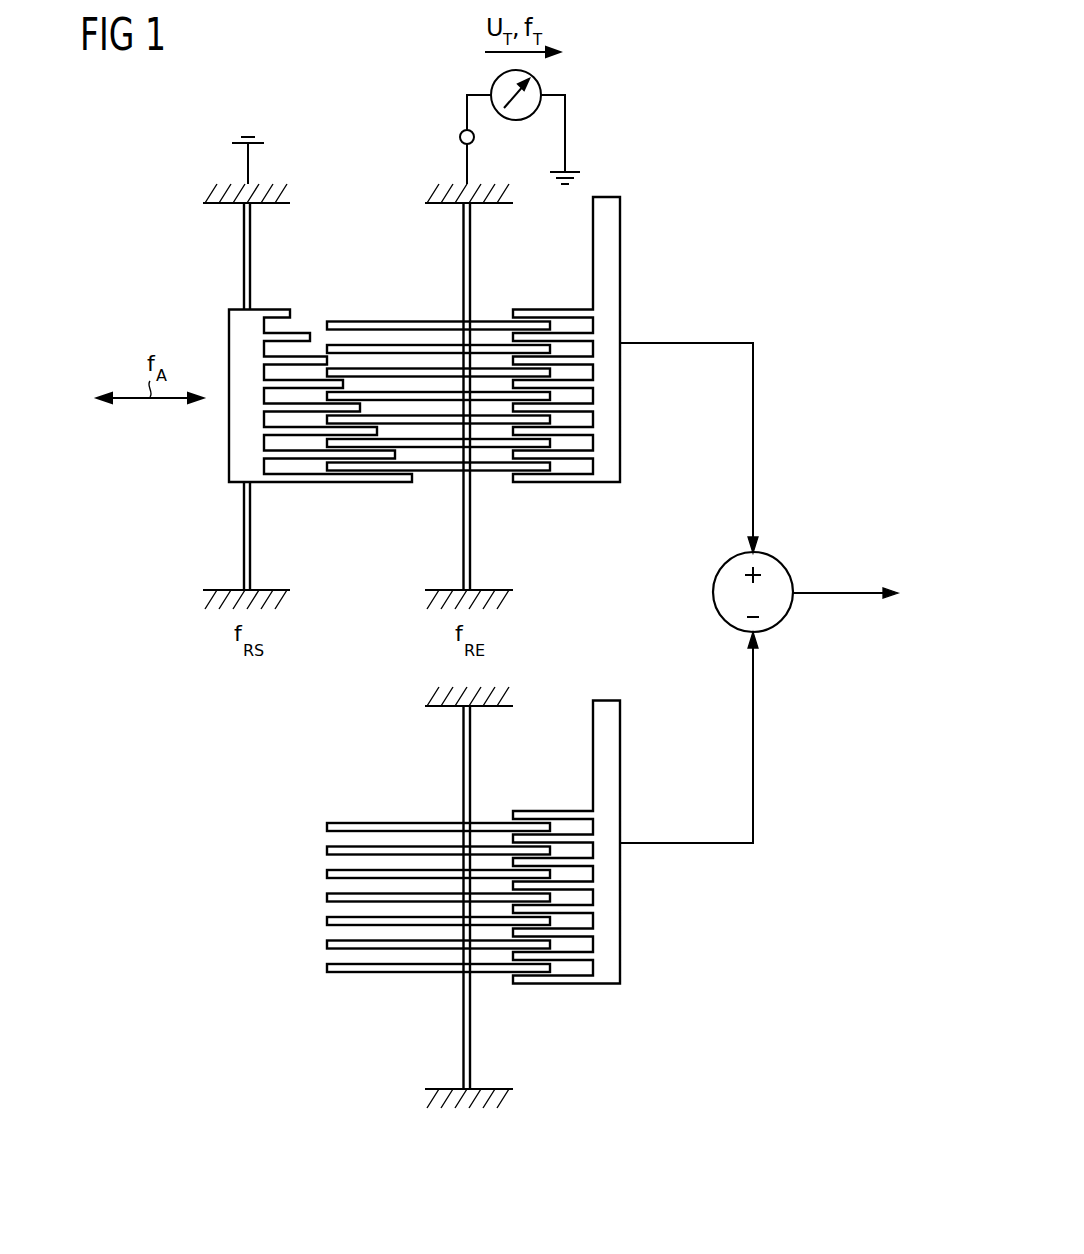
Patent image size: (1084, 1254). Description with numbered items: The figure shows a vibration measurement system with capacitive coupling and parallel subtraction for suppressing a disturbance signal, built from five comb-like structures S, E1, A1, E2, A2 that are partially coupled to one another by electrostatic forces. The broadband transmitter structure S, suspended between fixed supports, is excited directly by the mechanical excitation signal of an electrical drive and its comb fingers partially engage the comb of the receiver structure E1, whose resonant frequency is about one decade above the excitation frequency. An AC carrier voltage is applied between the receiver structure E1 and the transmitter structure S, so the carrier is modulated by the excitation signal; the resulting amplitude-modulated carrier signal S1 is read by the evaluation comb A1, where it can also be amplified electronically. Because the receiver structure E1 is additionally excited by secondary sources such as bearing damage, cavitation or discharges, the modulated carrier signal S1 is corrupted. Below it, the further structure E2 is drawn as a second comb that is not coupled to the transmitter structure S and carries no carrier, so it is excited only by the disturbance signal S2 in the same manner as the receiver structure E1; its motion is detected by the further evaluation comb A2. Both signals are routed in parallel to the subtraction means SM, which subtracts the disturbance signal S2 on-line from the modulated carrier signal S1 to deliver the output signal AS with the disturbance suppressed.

The transmitter structure S is at (235, 246).
The receiver structure E1 is at (462, 247).
The evaluation comb A1 is at (633, 249).
The further structure E2 is at (462, 748).
The further evaluation comb A2 is at (633, 751).
The amplitude-modulated carrier signal S1 is at (757, 382).
The disturbance signal S2 is at (757, 812).
The subtraction means SM is at (781, 560).
The output signal AS is at (853, 592).